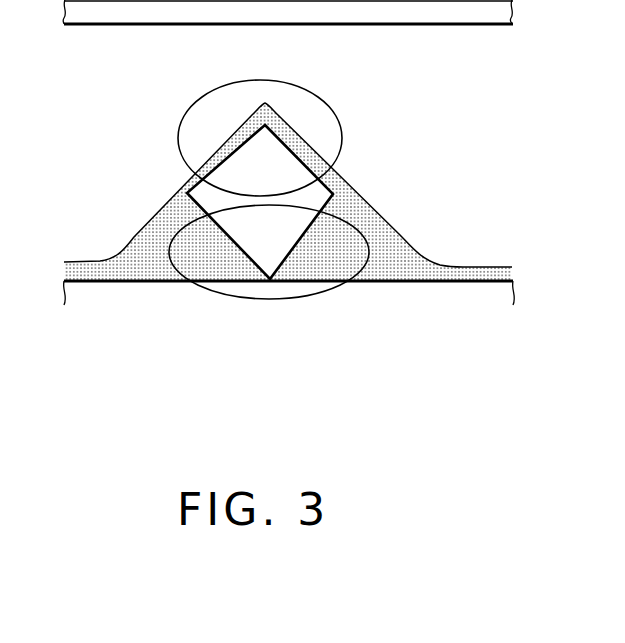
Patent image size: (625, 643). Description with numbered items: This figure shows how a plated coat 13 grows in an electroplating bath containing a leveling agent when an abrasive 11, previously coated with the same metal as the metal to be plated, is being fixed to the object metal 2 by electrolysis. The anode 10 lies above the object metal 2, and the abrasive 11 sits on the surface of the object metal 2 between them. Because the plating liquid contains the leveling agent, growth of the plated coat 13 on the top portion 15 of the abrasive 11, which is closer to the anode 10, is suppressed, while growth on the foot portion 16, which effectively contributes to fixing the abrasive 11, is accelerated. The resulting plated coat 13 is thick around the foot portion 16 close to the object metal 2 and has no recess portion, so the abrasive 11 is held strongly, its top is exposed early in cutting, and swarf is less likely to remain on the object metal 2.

The anode 10 is at (488, 15).
The object metal 2 is at (108, 317).
The abrasive 11 is at (212, 202).
The plated coat 13 is at (407, 232).
The top portion 15 is at (330, 105).
The foot portion 16 is at (278, 300).